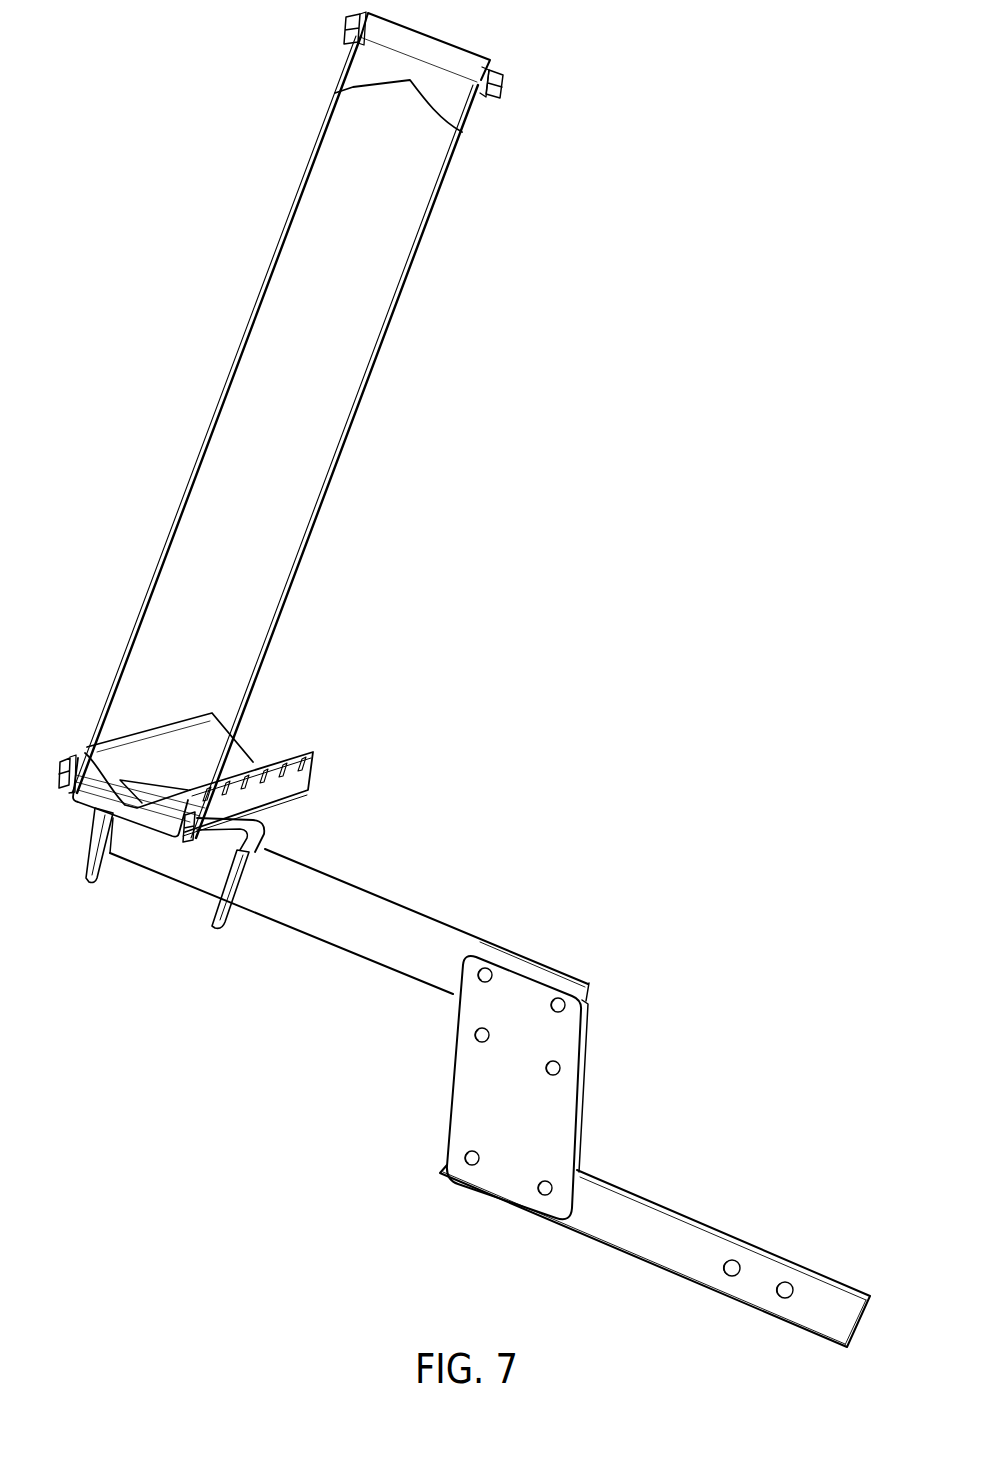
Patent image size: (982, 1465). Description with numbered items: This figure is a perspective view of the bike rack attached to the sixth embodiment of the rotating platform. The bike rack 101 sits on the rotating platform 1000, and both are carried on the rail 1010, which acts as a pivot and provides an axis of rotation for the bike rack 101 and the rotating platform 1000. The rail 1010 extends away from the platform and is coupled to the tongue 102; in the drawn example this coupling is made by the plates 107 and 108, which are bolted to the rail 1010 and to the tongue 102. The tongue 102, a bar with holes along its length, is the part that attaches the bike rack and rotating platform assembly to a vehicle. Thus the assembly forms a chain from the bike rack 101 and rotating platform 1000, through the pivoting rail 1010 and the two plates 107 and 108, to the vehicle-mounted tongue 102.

The bike rack 101 is at (289, 745).
The rotating platform 1000 is at (267, 826).
The rail 1010 is at (423, 913).
The plate 107 is at (460, 1073).
The plate 108 is at (583, 1080).
The tongue 102 is at (722, 1228).